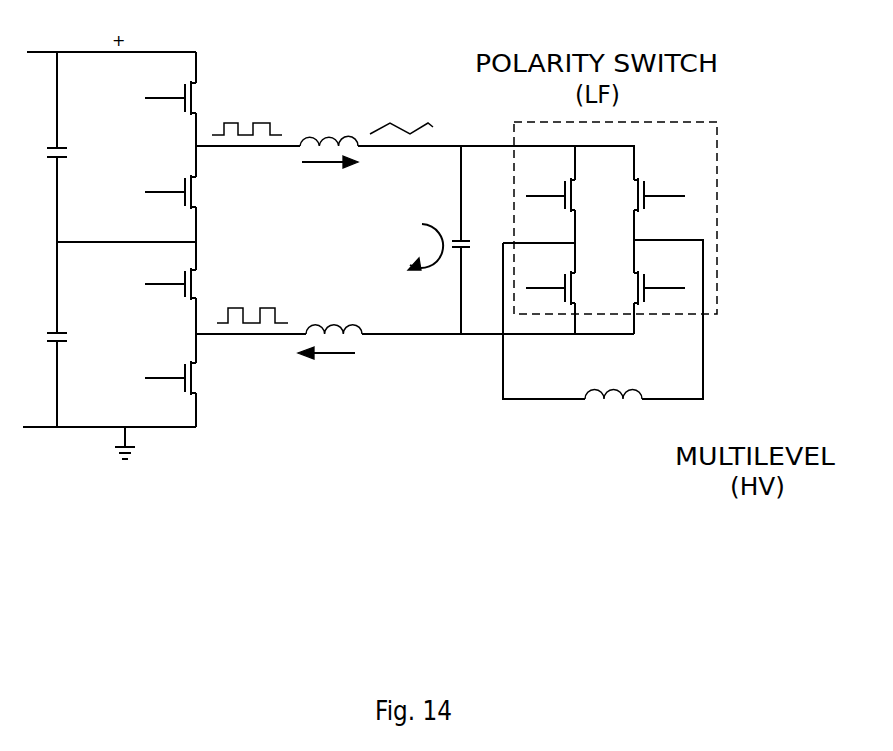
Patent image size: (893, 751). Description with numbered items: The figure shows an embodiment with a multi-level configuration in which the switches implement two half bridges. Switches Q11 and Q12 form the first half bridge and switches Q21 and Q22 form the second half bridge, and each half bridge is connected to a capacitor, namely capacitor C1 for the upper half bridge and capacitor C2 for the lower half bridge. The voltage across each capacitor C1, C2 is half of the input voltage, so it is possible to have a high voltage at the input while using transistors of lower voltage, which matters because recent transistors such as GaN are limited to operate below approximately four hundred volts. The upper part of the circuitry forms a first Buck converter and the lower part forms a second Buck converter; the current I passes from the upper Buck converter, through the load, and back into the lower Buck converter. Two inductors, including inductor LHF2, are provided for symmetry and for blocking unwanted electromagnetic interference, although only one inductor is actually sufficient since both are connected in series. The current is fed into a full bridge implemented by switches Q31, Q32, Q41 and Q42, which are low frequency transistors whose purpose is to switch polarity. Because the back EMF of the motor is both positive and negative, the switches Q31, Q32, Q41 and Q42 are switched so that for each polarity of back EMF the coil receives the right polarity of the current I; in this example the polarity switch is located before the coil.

The capacitor C1 is at (78, 154).
The capacitor C2 is at (75, 337).
The switch Q11 is at (167, 89).
The switch Q12 is at (170, 200).
The switch Q21 is at (170, 296).
The switch Q22 is at (170, 388).
The switch Q31 is at (547, 186).
The switch Q32 is at (548, 281).
The switch Q41 is at (661, 186).
The switch Q42 is at (661, 281).
The inductor LHF2 is at (334, 313).
The current I is at (328, 282).
The element coil is at (613, 412).